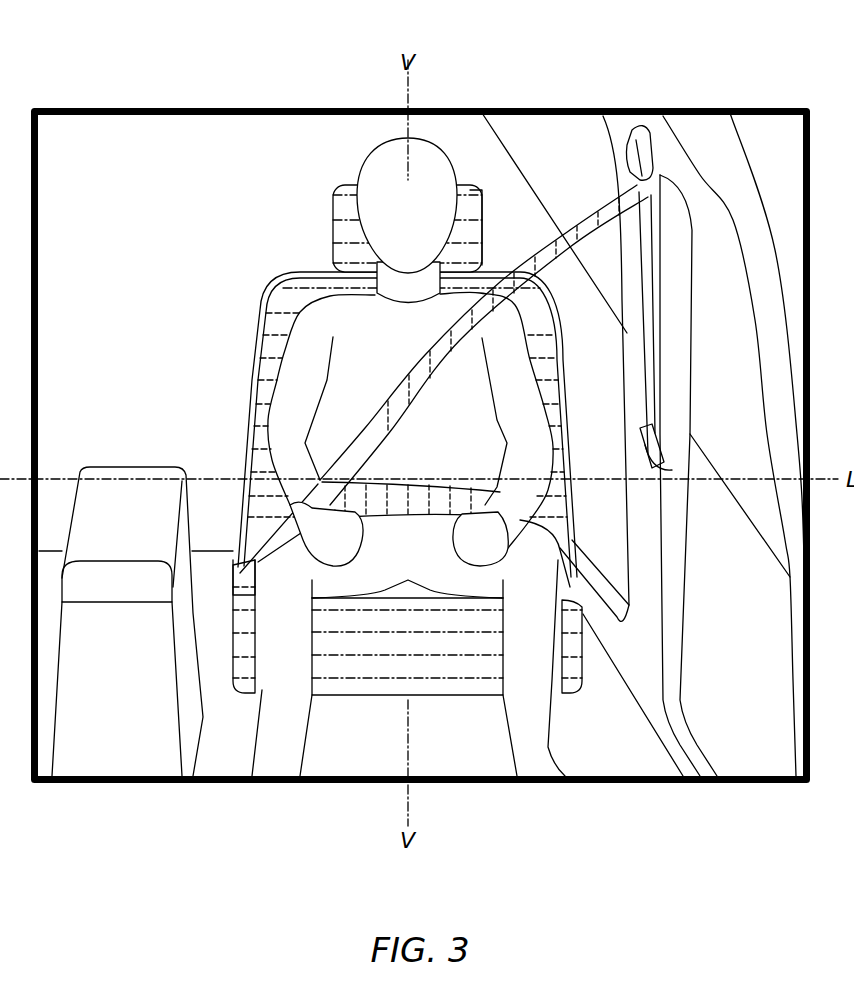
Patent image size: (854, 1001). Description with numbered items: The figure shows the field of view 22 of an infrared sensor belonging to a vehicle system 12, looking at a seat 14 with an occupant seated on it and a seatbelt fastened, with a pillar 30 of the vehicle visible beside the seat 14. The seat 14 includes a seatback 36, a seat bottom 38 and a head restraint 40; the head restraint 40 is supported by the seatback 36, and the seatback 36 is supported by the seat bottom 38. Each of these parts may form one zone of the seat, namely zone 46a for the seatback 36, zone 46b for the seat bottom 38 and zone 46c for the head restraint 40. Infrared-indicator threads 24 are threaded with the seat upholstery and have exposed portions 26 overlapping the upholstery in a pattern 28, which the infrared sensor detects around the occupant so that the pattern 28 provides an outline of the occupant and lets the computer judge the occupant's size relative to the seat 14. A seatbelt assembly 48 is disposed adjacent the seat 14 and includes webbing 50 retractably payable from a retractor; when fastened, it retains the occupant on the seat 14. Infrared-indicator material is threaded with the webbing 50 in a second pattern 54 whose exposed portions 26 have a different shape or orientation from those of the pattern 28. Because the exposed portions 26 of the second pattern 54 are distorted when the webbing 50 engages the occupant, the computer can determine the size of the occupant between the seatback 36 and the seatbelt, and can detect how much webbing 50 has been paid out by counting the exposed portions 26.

The system 12 is at (157, 78).
The seat 14 is at (461, 448).
The field of view 22 is at (745, 108).
The infrared-indicator threads 24 is at (425, 358).
The exposed portions 26 is at (388, 425).
The pattern 28 is at (438, 663).
The pillar 30 is at (662, 340).
The seatback 36 is at (253, 370).
The seat bottom 38 is at (253, 697).
The head restraint 40 is at (335, 232).
The zone 46a is at (232, 540).
The zone 46b is at (585, 665).
The zone 46c is at (487, 228).
The seatbelt assembly 48 is at (658, 152).
The webbing 50 is at (640, 277).
The second pattern 54 is at (565, 212).